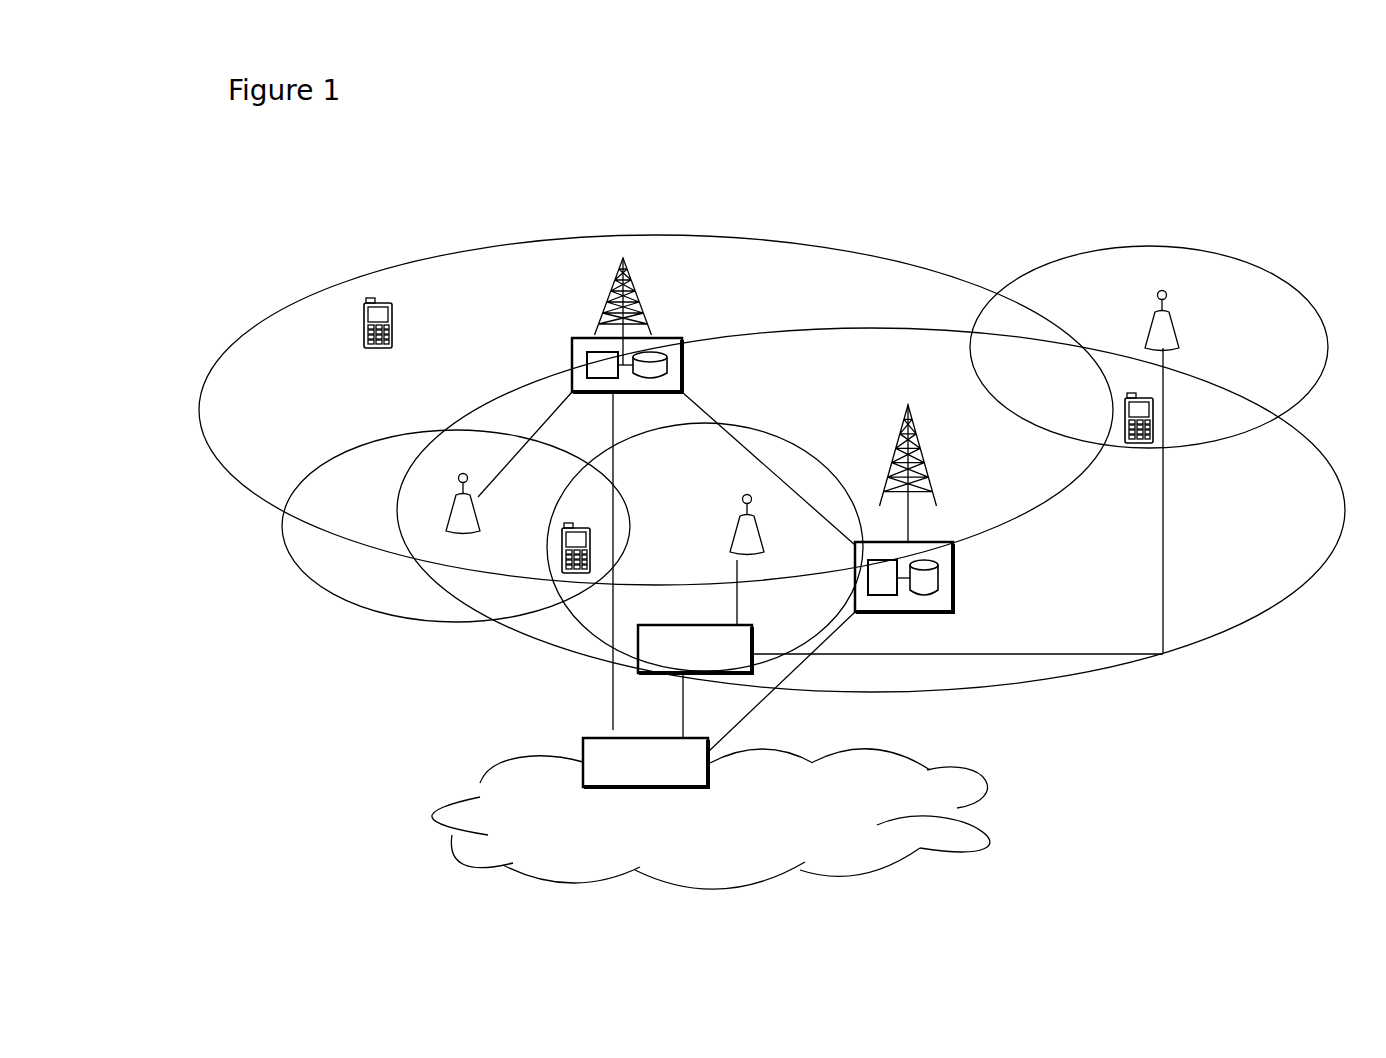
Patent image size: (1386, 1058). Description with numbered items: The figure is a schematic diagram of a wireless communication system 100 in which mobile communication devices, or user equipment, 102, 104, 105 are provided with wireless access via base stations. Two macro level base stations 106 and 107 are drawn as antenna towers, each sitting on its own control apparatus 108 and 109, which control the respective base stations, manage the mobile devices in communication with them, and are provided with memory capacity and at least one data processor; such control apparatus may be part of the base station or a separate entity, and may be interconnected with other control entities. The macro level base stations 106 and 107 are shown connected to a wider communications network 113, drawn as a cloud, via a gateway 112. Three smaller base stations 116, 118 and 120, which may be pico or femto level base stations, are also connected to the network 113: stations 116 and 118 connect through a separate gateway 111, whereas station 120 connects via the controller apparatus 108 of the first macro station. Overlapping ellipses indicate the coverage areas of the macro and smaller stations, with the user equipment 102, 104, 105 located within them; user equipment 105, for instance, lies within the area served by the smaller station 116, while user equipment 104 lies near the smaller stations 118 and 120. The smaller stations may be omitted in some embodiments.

The wireless communication system 100 is at (289, 285).
The user equipment 102 is at (363, 338).
The user equipment 104 is at (562, 550).
The user equipment 105 is at (1142, 443).
The macro level base station 106 is at (602, 303).
The macro level base station 107 is at (930, 473).
The control apparatus 108 is at (570, 353).
The control apparatus 109 is at (943, 602).
The gateway 111 is at (647, 655).
The gateway 112 is at (587, 738).
The wider communications network 113 is at (508, 795).
The smaller base station 116 is at (1147, 322).
The smaller base station 118 is at (747, 545).
The smaller base station 120 is at (452, 508).